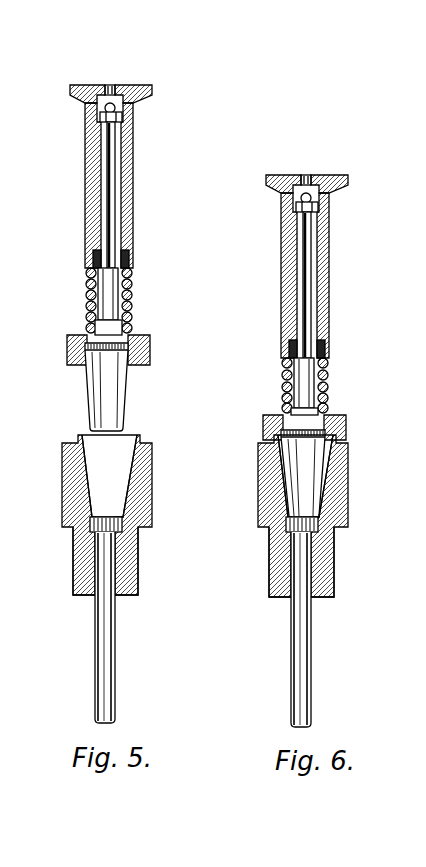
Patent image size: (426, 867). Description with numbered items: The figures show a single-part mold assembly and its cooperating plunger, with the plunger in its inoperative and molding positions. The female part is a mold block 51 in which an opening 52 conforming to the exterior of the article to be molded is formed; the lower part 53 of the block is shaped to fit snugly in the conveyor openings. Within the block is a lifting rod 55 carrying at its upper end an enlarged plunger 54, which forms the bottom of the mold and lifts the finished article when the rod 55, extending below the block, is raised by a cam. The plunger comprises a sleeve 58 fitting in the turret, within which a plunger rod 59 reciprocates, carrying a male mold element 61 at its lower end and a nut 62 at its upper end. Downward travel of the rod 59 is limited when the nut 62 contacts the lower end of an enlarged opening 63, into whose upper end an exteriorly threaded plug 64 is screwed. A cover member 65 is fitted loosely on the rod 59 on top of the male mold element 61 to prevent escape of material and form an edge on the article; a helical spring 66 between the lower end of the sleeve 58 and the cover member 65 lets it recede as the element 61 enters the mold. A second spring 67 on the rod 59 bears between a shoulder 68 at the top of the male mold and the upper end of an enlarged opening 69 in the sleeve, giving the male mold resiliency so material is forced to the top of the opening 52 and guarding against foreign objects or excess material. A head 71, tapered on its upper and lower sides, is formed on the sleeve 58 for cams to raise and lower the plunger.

In FIG. 5, the mold block 51 is at (63, 490).
In FIG. 6, the mold block 51 is at (262, 494).
In FIG. 5, the opening 52 is at (132, 475).
In FIG. 6, the opening 52 is at (332, 490).
In FIG. 5, the lower part of mold block 53 is at (272, 568).
In FIG. 6, the lower part of mold block 53 is at (269, 568).
In FIG. 5, the plunger 54 is at (92, 536).
In FIG. 6, the plunger 54 is at (318, 528).
In FIG. 5, the lifting rod 55 is at (118, 657).
In FIG. 6, the lifting rod 55 is at (317, 647).
In FIG. 5, the sleeve 58 is at (134, 196).
In FIG. 6, the sleeve 58 is at (332, 280).
In FIG. 5, the plunger rod 59 is at (116, 170).
In FIG. 6, the plunger rod 59 is at (328, 250).
In FIG. 5, the male mold element 61 is at (128, 397).
In FIG. 6, the male mold element 61 is at (330, 467).
In FIG. 5, the nut 62 is at (104, 114).
In FIG. 6, the nut 62 is at (300, 203).
In FIG. 5, the enlarged opening 63 is at (123, 119).
In FIG. 6, the enlarged opening 63 is at (322, 212).
In FIG. 5, the exteriorly threaded plug 64 is at (118, 88).
In FIG. 6, the exteriorly threaded plug 64 is at (308, 173).
In FIG. 5, the cover member 65 is at (152, 346).
In FIG. 6, the cover member 65 is at (347, 420).
In FIG. 5, the helical spring 66 is at (130, 272).
In FIG. 6, the helical spring 66 is at (327, 378).
In FIG. 5, the second spring 67 is at (88, 285).
In FIG. 6, the second spring 67 is at (287, 372).
In FIG. 5, the shoulder 68 is at (128, 326).
In FIG. 6, the shoulder 68 is at (291, 409).
In FIG. 5, the enlarged opening 69 is at (92, 232).
In FIG. 6, the enlarged opening 69 is at (288, 323).
In FIG. 5, the head 71 is at (146, 90).
In FIG. 6, the head 71 is at (343, 177).